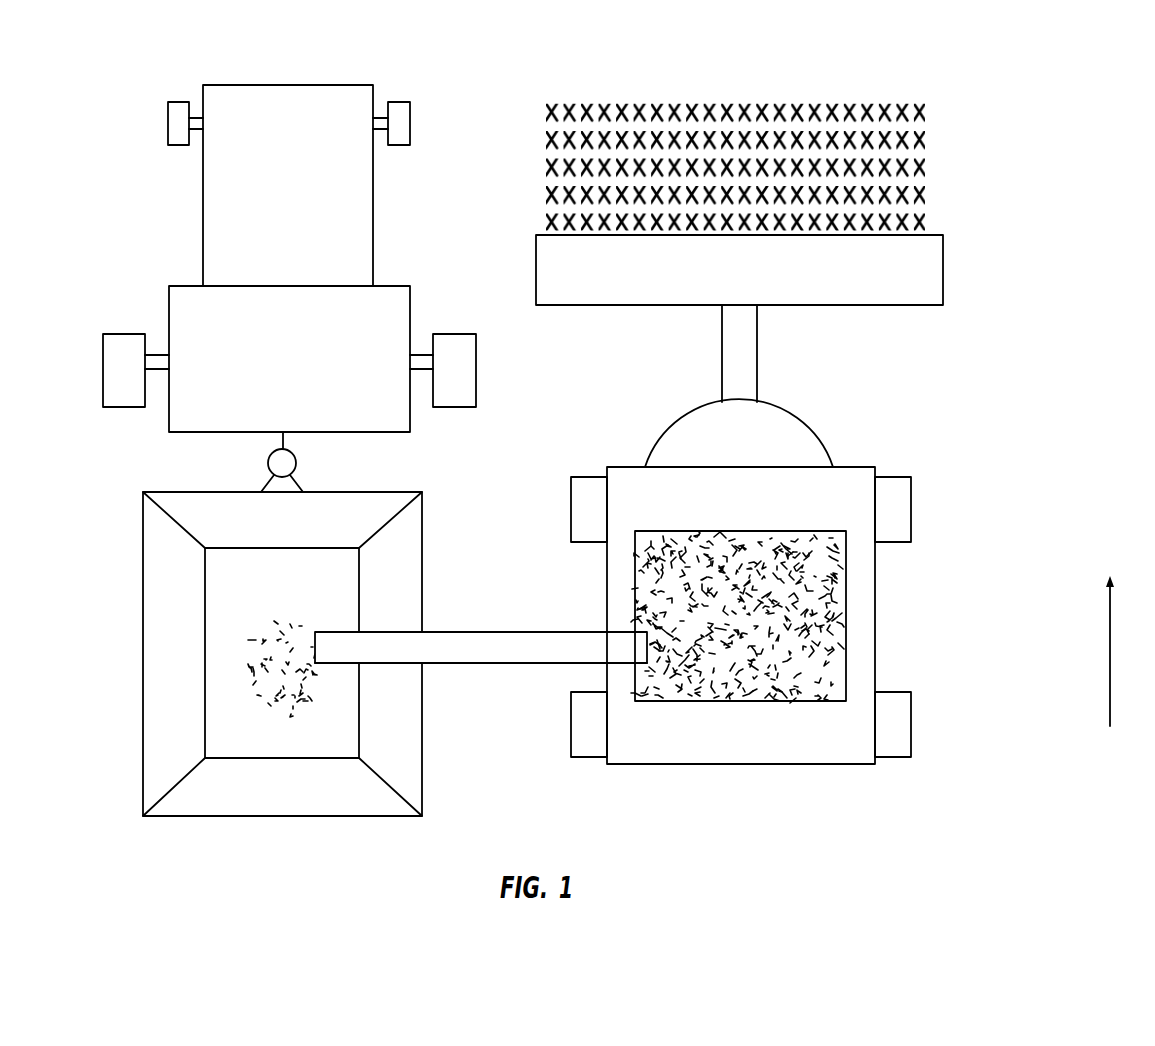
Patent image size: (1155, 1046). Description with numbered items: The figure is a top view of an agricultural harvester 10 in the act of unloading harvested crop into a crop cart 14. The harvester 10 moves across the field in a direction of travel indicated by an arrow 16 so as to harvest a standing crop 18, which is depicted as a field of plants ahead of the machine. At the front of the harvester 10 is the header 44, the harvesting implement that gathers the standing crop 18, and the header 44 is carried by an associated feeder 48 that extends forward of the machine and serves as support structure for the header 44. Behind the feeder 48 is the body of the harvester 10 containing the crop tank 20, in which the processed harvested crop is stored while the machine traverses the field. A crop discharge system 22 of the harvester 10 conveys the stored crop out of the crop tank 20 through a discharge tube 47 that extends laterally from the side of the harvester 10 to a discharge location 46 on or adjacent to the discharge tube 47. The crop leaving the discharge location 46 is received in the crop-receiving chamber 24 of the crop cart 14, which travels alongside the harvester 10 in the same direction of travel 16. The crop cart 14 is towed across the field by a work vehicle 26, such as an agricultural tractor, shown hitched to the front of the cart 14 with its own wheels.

The agricultural harvester 10 is at (1013, 453).
The crop cart 14 is at (256, 654).
The direction of travel 16 is at (1112, 657).
The standing crop 18 is at (868, 98).
The crop tank 20 is at (762, 611).
The crop discharge system 22 is at (477, 664).
The crop-receiving chamber 24 is at (235, 726).
The work vehicle 26 is at (203, 245).
The header 44 is at (943, 270).
The discharge location 46 is at (302, 674).
The discharge tube 47 is at (455, 630).
The feeder 48 is at (757, 377).